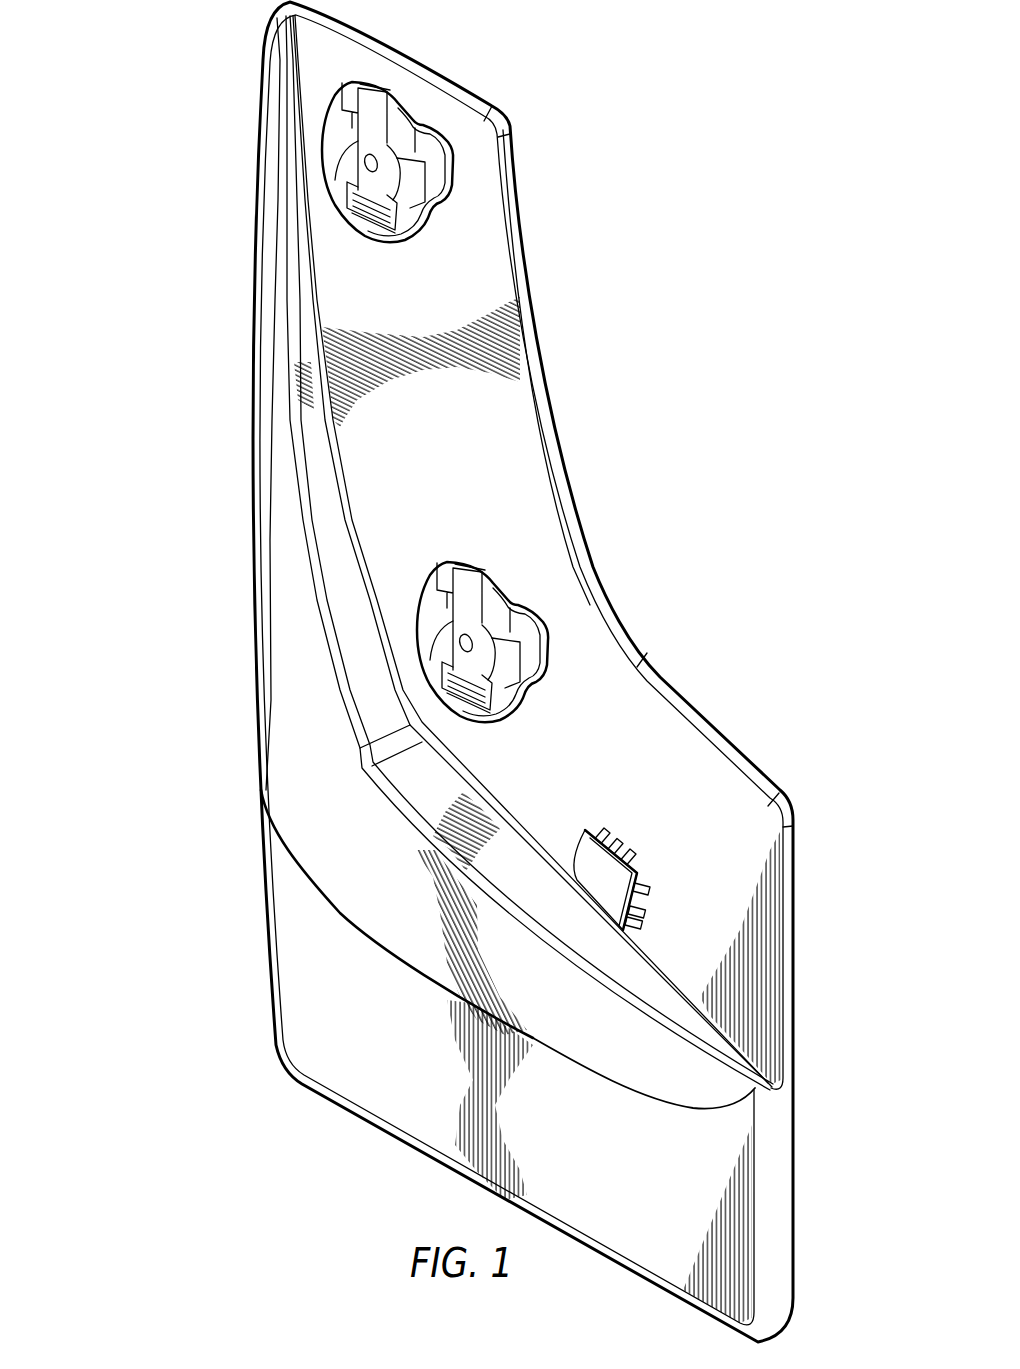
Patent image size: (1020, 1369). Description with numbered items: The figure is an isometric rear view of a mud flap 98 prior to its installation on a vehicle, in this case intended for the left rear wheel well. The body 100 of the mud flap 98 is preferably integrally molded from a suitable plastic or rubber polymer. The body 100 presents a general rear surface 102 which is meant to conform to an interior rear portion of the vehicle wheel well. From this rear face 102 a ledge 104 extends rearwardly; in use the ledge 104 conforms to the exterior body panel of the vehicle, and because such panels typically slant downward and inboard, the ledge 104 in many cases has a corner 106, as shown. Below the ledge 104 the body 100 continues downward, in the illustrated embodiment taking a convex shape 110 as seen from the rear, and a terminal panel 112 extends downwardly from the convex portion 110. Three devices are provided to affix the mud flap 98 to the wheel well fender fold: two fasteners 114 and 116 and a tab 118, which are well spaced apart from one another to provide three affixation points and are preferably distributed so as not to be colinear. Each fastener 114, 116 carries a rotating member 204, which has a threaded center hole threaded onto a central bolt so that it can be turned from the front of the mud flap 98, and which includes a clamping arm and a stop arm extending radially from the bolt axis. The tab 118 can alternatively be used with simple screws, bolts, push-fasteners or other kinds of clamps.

The mud flap 98 is at (133, 445).
The body 100 is at (248, 410).
The general rear surface 102 is at (701, 766).
The ledge 104 is at (321, 488).
The corner 106 is at (378, 752).
The convex shape 110 is at (383, 935).
The terminal panel 112 is at (393, 1110).
The fastener 114 is at (370, 258).
The fastener 116 is at (434, 548).
The tab 118 is at (645, 853).
The rotating member 204 is at (367, 147).